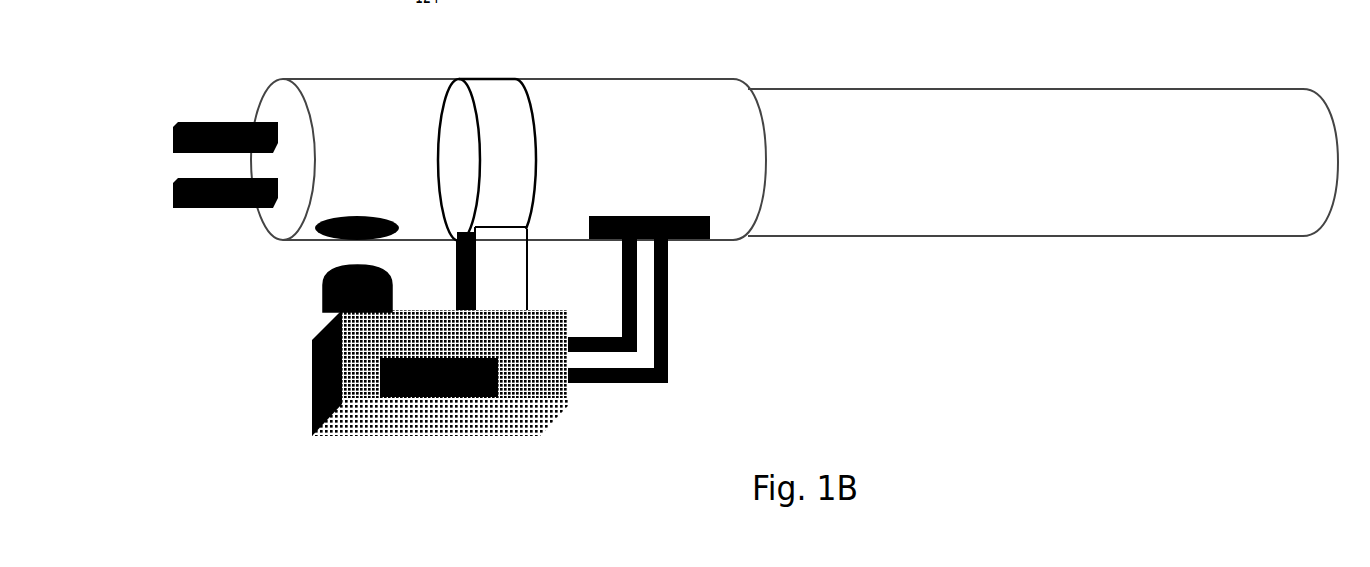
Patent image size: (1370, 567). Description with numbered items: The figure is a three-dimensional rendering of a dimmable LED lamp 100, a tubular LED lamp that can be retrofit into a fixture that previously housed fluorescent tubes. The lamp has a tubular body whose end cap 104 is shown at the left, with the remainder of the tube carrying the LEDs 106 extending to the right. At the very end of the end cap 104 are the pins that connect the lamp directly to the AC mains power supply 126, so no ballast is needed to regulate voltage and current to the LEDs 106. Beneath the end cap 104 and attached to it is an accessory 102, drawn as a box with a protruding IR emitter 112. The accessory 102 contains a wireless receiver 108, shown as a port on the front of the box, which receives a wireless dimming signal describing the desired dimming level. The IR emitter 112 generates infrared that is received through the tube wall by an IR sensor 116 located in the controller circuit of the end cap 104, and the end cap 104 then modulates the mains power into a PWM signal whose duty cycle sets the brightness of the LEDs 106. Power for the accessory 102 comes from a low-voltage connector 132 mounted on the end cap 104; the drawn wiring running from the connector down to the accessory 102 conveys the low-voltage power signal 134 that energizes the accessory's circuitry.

The dimmable LED lamp 100 is at (750, 255).
The accessory 102 is at (312, 398).
The end cap 104 is at (612, 80).
The LEDs 106 is at (1145, 90).
The wireless receiver 108 is at (467, 400).
The IR emitter 112 is at (323, 300).
The IR sensor 116 is at (368, 202).
The AC mains power supply 126 is at (209, 95).
The low-voltage connector 132 is at (680, 245).
The low-voltage power signal 134 is at (622, 317).